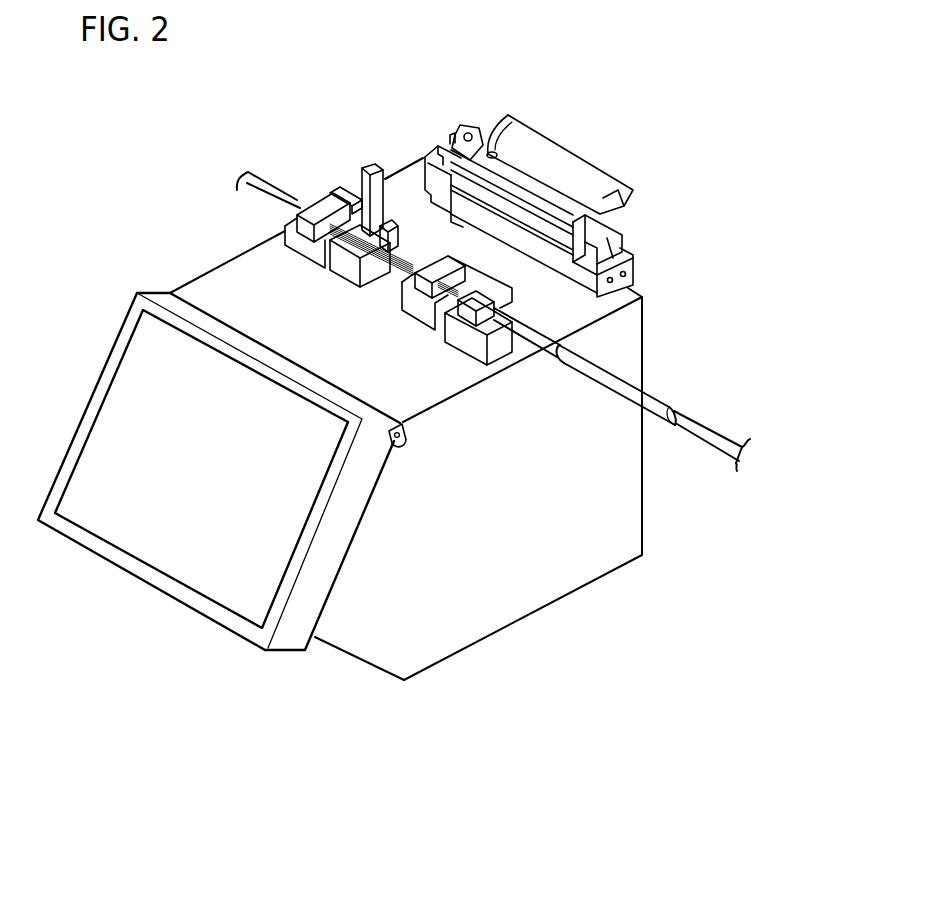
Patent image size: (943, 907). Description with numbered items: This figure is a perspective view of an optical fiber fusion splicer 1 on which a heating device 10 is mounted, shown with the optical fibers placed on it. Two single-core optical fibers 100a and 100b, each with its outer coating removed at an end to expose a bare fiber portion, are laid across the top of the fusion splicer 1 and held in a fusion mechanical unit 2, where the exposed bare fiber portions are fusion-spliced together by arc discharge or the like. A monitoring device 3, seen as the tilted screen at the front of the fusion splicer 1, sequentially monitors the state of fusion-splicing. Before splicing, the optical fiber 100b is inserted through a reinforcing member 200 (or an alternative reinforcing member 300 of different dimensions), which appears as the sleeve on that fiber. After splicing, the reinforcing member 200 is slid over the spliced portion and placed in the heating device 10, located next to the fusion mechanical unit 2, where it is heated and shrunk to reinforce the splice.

The fusion splicer 1 is at (553, 608).
The fusion mechanical unit 2 is at (376, 297).
The monitoring device 3 is at (168, 548).
The heating device 10 is at (573, 143).
The single-core optical fiber 100a is at (273, 182).
The single-core optical fiber 100b is at (688, 438).
The reinforcing member 200 is at (649, 373).
The reinforcing member 300 is at (650, 390).